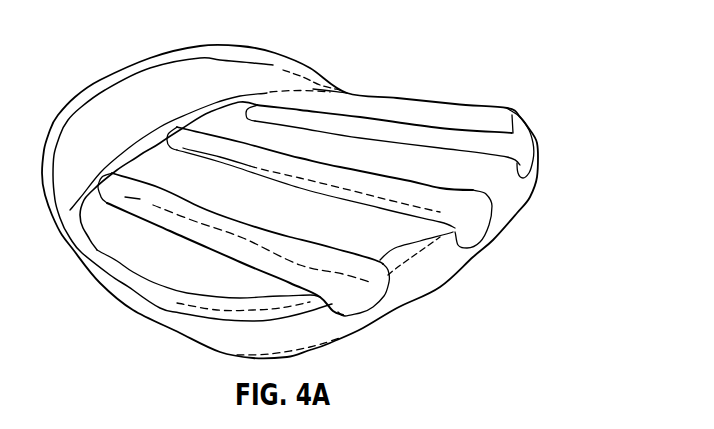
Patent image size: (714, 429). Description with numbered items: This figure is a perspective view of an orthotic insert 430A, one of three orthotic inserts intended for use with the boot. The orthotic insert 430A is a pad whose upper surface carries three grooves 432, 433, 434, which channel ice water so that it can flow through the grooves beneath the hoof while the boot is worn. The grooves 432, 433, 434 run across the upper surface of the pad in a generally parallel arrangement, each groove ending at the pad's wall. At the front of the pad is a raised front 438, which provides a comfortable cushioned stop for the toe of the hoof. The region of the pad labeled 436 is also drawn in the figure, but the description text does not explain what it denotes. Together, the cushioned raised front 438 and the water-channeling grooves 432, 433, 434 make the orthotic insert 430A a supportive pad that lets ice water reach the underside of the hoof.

The orthotic insert 430A is at (458, 40).
The groove 432 is at (530, 162).
The groove 433 is at (473, 227).
The groove 434 is at (377, 300).
The body wall 436 is at (438, 285).
The raised front 438 is at (85, 108).